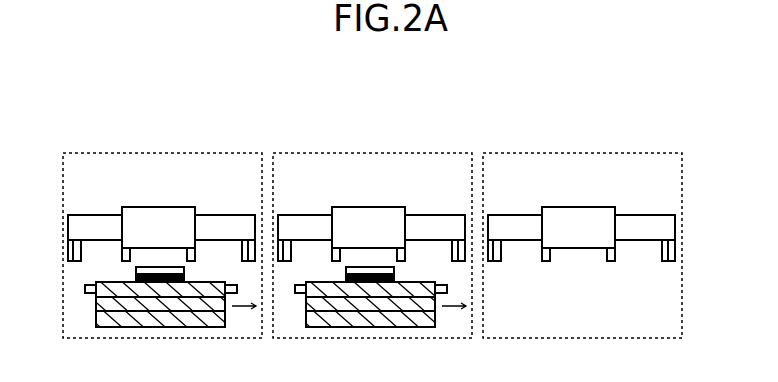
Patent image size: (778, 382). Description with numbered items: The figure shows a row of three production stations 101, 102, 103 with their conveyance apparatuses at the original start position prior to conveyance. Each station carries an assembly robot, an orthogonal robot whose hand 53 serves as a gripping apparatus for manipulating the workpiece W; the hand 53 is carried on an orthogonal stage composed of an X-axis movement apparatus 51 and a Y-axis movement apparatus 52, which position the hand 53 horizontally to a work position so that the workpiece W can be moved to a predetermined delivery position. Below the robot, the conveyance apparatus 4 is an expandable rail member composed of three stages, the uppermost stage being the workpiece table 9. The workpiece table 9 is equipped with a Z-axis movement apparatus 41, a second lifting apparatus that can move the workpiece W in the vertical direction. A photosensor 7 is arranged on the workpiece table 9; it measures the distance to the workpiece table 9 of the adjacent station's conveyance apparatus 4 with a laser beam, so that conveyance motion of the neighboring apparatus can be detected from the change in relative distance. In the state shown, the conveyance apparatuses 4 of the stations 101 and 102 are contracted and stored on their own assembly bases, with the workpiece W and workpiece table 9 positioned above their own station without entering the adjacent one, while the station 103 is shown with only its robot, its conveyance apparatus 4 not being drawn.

The station 101 is at (187, 152).
The station 102 is at (397, 152).
The station 103 is at (607, 152).
The X-axis movement apparatus 51 is at (112, 232).
The hand 53 is at (143, 235).
The Y-axis movement apparatus 52 is at (73, 252).
The Z-axis movement apparatus 41 is at (178, 274).
The workpiece W is at (158, 270).
The workpiece table 9 is at (203, 280).
The photosensor 7 is at (92, 284).
The conveyance apparatus 4 is at (160, 327).